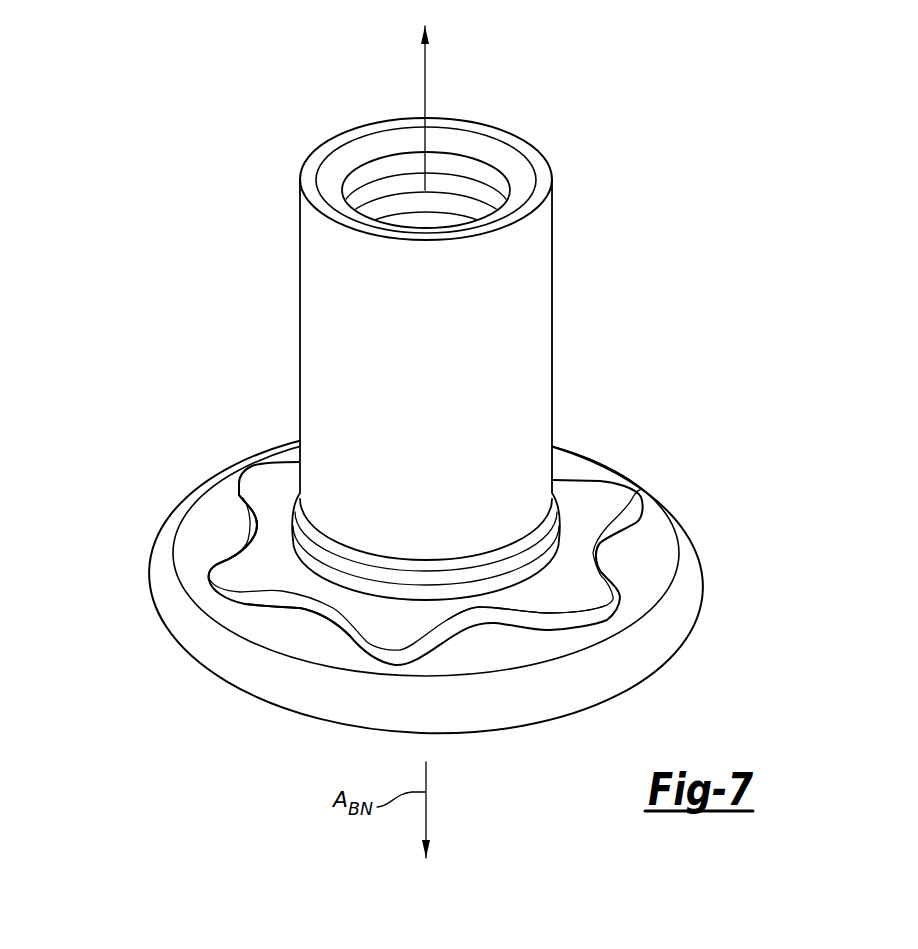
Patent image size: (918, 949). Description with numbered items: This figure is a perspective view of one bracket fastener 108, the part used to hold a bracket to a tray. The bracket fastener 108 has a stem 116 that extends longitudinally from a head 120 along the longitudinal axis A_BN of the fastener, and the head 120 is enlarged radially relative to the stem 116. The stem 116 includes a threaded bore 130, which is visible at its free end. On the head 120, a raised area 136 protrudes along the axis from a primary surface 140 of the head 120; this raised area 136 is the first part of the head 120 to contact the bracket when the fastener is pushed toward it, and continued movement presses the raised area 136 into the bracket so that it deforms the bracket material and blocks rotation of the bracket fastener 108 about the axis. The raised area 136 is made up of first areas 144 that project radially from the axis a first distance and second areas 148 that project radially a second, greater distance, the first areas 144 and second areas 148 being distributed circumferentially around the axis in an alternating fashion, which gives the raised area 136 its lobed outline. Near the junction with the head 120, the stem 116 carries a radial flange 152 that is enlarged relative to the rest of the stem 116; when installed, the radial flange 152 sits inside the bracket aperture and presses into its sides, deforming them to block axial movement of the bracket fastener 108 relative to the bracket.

The bracket fastener 108 is at (605, 102).
The stem 116 is at (463, 366).
The head 120 is at (678, 551).
The threaded bore 130 is at (467, 162).
The raised area 136 is at (237, 573).
The primary surface 140 is at (303, 637).
The first areas 144 is at (540, 572).
The second areas 148 is at (497, 612).
The radial flange 152 is at (203, 542).